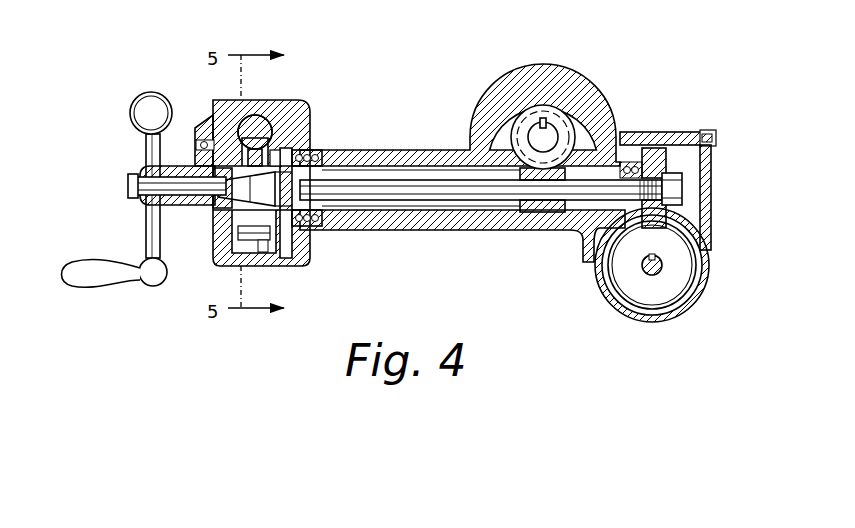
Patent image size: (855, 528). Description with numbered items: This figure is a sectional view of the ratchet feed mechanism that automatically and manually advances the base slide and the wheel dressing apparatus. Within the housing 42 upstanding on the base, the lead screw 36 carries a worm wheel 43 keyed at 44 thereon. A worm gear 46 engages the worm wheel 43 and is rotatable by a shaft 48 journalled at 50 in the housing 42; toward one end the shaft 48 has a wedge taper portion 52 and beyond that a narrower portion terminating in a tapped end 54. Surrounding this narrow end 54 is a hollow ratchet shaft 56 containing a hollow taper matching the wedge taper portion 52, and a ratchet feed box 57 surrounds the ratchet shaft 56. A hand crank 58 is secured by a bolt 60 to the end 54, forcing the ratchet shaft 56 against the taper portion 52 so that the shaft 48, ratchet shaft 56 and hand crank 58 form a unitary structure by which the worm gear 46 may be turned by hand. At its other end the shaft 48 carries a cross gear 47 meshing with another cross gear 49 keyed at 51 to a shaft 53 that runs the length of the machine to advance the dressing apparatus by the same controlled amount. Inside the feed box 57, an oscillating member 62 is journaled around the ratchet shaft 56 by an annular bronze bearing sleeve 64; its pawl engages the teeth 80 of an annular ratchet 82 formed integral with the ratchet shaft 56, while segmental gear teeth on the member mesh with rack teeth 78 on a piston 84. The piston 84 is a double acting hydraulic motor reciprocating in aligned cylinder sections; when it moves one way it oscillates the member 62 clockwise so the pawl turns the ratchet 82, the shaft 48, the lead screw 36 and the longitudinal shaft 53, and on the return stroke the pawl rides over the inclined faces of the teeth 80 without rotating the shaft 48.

The lead screw 36 is at (555, 130).
The housing 42 is at (487, 96).
The worm wheel 43 is at (532, 90).
The key 44 is at (578, 95).
The worm gear 46 is at (545, 212).
The cross gear 47 is at (668, 168).
The shaft 48 is at (466, 200).
The cross gear 49 is at (672, 262).
The journal 50 is at (640, 130).
The key 51 is at (700, 248).
The wedge taper portion 52 is at (322, 184).
The shaft 53 is at (660, 270).
The tapped end 54 is at (208, 202).
The ratchet shaft 56 is at (220, 212).
The ratchet feed box 57 is at (284, 266).
The hand crank 58 is at (100, 268).
The bolt 60 is at (128, 186).
The oscillating member 62 is at (278, 166).
The annular bronze bearing sleeve 64 is at (292, 168).
The rack teeth 78 is at (284, 148).
The teeth 80 is at (296, 246).
The annular ratchet 82 is at (322, 162).
The piston 84 is at (258, 130).